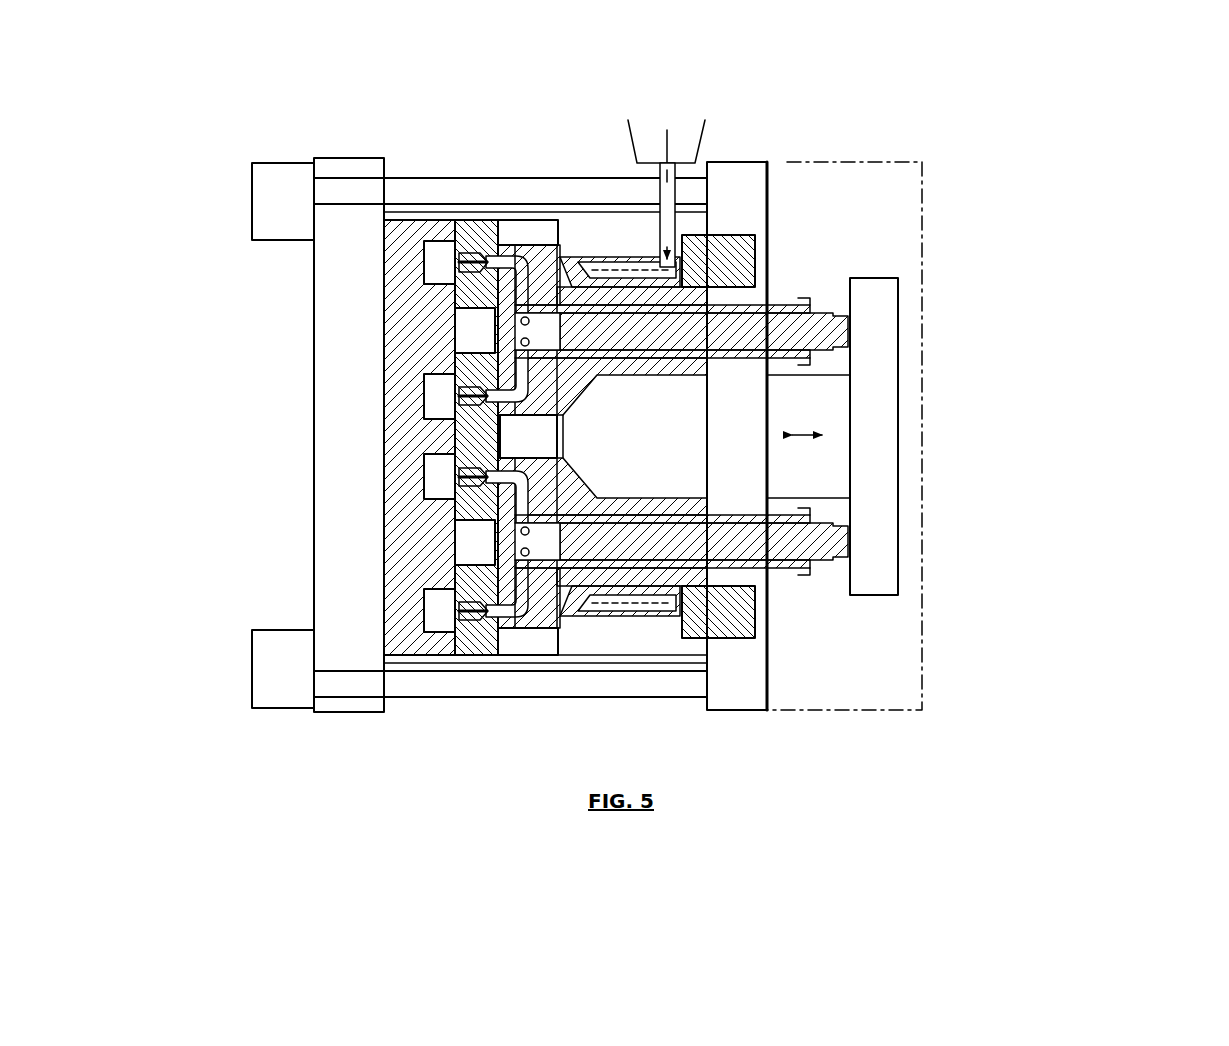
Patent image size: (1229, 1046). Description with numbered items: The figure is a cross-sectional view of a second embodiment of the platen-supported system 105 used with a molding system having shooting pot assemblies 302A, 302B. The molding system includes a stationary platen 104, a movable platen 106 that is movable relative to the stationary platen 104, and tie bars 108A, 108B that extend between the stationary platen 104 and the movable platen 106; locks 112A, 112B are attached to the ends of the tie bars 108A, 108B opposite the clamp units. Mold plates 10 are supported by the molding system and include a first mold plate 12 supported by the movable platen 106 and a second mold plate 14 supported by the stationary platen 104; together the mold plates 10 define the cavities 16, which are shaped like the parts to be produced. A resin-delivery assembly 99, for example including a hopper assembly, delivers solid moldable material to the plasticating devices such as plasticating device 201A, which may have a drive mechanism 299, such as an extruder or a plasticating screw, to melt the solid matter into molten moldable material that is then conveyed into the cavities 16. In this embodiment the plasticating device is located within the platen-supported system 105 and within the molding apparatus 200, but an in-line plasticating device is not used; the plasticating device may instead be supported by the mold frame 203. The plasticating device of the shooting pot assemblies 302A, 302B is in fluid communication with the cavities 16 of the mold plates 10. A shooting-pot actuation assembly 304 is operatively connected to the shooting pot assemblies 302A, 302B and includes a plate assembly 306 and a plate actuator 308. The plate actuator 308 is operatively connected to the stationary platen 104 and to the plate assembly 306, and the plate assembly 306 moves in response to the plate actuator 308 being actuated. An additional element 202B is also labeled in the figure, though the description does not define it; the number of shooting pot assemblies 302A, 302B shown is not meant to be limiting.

The mold plates 10 is at (449, 367).
The first mold plate 12 is at (428, 220).
The second mold plate 14 is at (485, 220).
The cavities 16 is at (425, 586).
The resin-delivery assembly 99 is at (677, 128).
The stationary platen 104 is at (733, 162).
The platen-supported system 105 is at (864, 444).
The movable platen 106 is at (336, 158).
The tie bar 108A is at (416, 178).
The tie bar 108B is at (513, 697).
The lock 112A is at (262, 208).
The lock 112B is at (262, 685).
The molding apparatus 200 is at (846, 444).
The plasticating device 201A is at (829, 489).
The rod sleeve 202B is at (737, 603).
The mold frame 203 is at (607, 586).
The drive mechanism 299 is at (640, 268).
The shooting pot assembly 302A is at (838, 330).
The shooting pot assembly 302B is at (838, 535).
The shooting-pot actuation assembly 304 is at (951, 697).
The plate assembly 306 is at (870, 597).
The plate actuator 308 is at (838, 455).